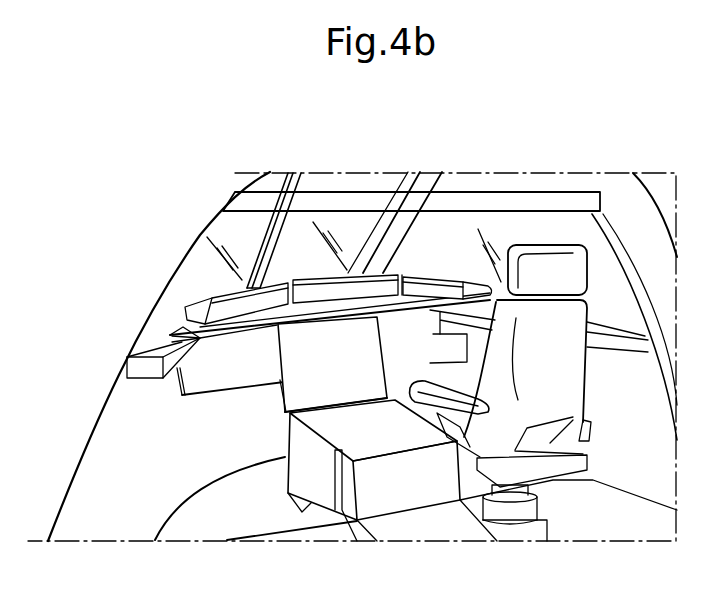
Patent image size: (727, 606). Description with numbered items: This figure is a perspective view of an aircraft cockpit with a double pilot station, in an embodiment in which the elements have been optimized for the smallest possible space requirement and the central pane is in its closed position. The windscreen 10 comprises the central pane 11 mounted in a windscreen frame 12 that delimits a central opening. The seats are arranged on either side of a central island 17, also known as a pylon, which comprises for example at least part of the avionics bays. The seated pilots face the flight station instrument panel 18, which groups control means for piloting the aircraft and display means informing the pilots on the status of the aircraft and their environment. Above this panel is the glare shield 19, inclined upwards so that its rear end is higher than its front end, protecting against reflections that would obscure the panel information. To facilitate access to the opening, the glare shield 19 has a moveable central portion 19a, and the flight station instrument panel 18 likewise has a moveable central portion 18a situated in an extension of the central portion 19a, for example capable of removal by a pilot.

The windscreen 10 is at (432, 253).
The central pane 11 is at (354, 228).
The windscreen frame 12 is at (252, 237).
The central island 17 is at (384, 434).
The flight station instrument panel 18 is at (202, 356).
The moveable central portion 18a is at (332, 364).
The glare shield 19 is at (462, 281).
The moveable central portion 19a is at (334, 293).